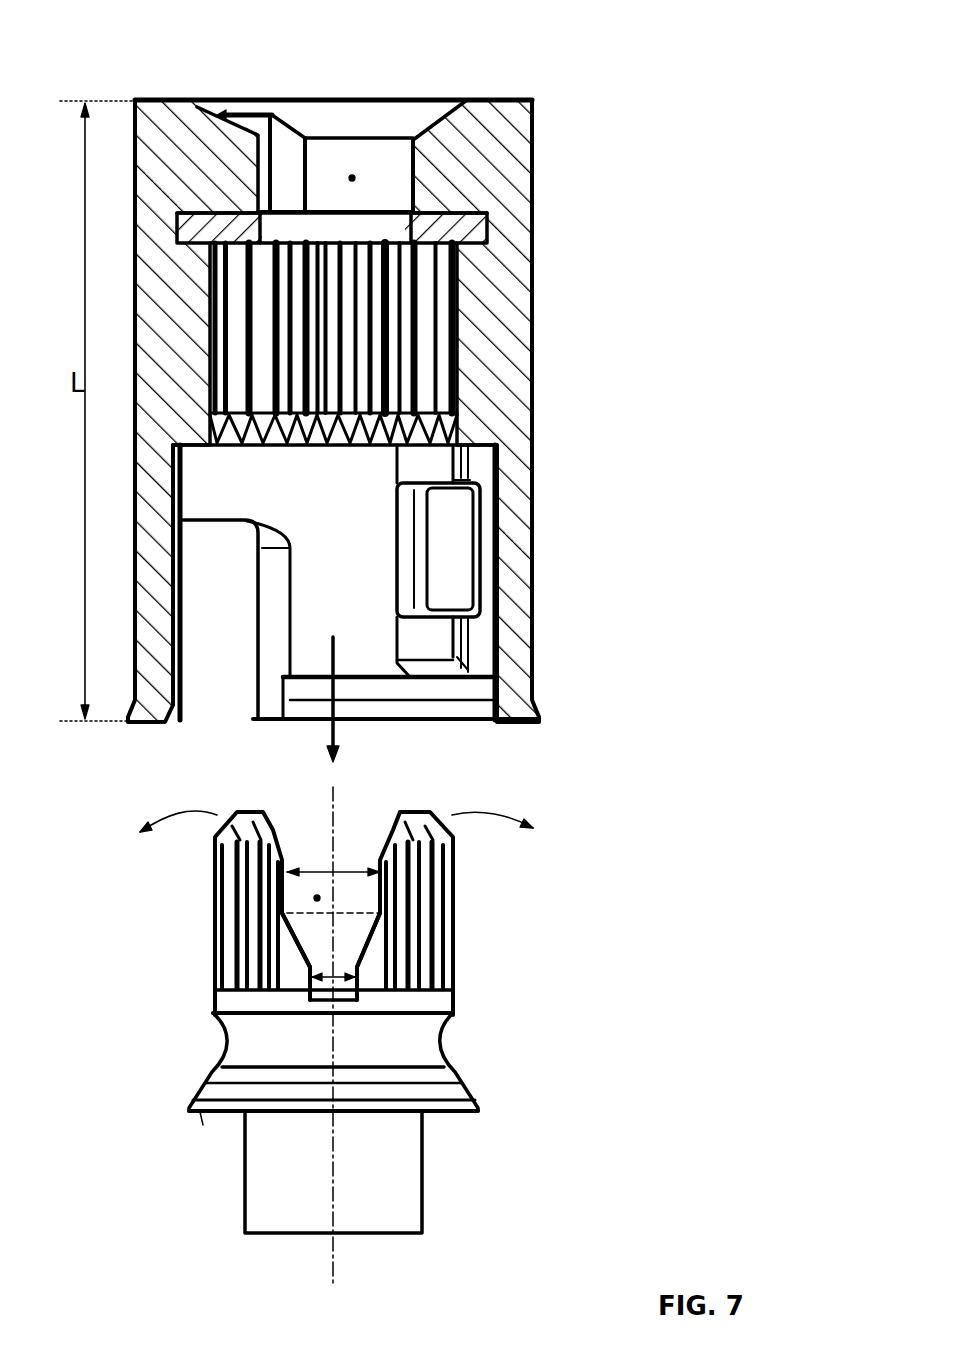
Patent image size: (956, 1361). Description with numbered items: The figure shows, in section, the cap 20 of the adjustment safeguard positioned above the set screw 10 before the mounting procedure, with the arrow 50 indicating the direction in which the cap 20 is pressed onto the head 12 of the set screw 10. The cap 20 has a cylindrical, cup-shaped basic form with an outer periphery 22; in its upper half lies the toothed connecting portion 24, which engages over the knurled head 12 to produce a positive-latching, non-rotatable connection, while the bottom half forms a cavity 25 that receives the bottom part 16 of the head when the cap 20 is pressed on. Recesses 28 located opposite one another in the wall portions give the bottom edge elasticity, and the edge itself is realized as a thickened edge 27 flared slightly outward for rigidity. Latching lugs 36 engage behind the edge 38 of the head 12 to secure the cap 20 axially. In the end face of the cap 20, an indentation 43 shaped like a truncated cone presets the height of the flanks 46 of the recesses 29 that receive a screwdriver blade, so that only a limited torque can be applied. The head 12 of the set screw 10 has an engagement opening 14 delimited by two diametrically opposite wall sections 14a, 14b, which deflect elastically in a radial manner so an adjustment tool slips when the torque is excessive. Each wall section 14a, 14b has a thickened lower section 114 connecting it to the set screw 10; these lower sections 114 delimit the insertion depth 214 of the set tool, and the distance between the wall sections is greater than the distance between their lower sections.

The set screw 10 is at (377, 1182).
The head of the set screw 12 is at (348, 887).
The engagement opening 14 is at (317, 898).
The wall section 14a is at (247, 812).
The wall section 14b is at (410, 812).
The bottom part of the head 16 is at (468, 1058).
The cap 20 is at (500, 427).
The outer periphery 22 is at (533, 210).
The connecting portion 24 is at (352, 322).
The cavity 25 is at (347, 547).
The thickened edge 27 is at (528, 700).
The recess 28 is at (233, 631).
The recess 29 is at (243, 113).
The latching lug 36 is at (428, 638).
The edge of the head 38 is at (198, 1112).
The indentation 43 is at (298, 118).
The flank 46 is at (280, 133).
The arrow 50 is at (338, 693).
The thickened lower section 114 is at (297, 970).
The insertion depth 214 is at (327, 913).